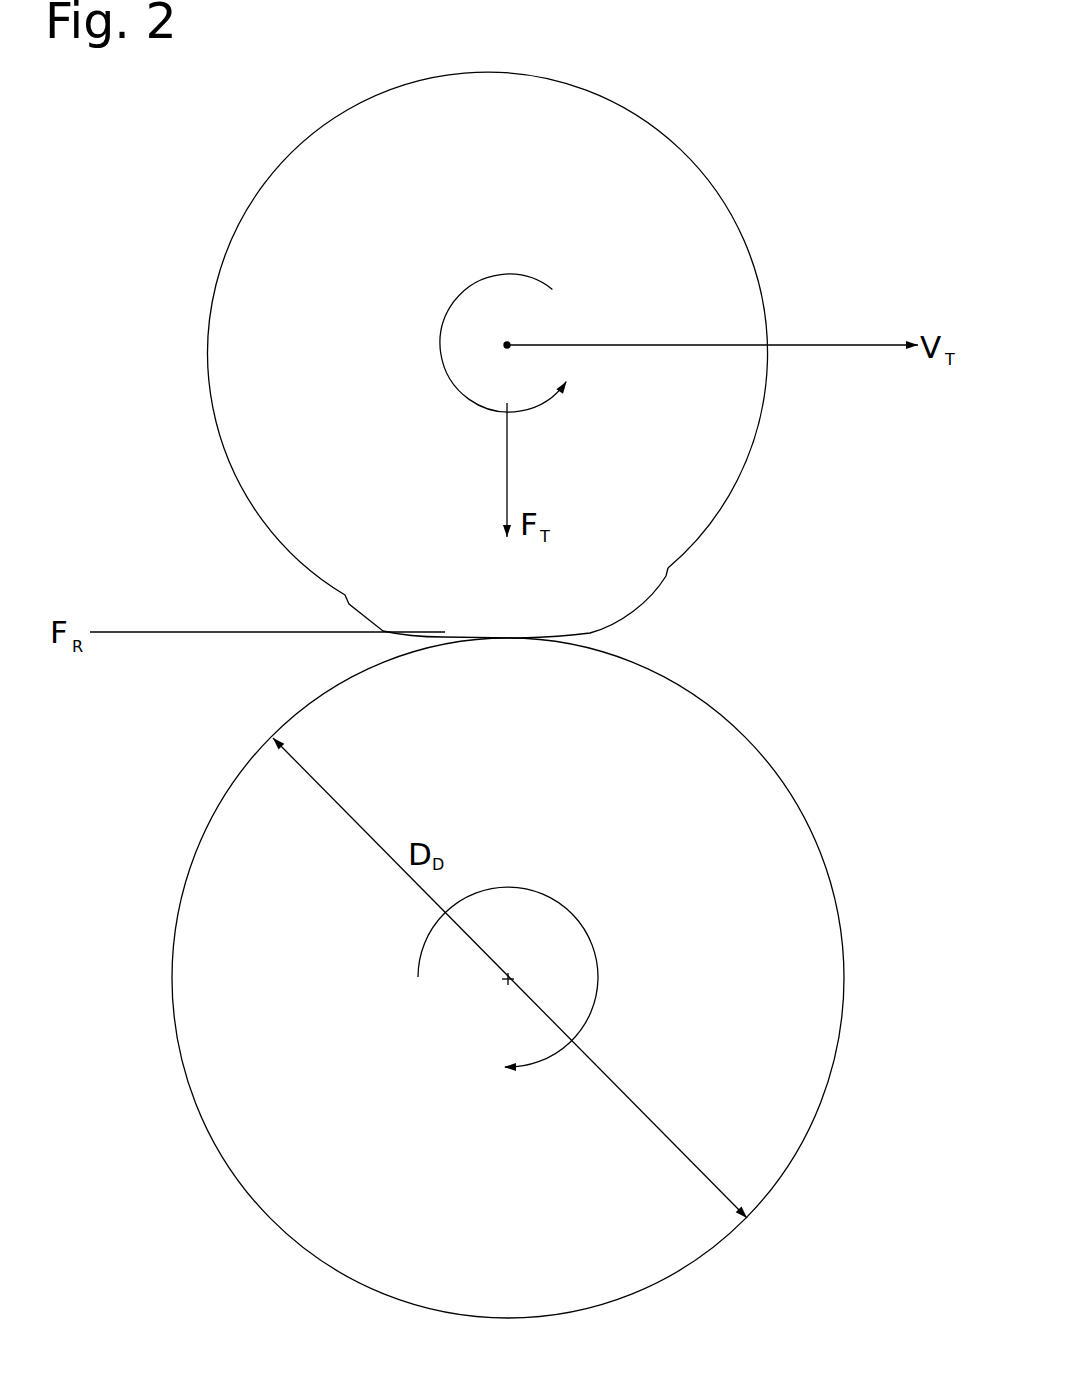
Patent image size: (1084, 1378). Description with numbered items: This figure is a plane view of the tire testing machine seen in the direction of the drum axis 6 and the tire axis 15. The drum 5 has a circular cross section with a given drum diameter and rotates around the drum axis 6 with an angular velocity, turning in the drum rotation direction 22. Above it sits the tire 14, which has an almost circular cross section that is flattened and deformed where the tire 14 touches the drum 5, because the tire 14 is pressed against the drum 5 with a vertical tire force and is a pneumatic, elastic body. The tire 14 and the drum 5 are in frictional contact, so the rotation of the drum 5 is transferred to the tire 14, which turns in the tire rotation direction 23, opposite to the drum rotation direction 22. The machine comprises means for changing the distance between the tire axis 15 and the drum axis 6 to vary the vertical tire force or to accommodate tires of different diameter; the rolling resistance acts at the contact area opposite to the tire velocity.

The tire 14 is at (486, 97).
The tire rotation direction 23 is at (458, 307).
The tire axis 15 is at (508, 344).
The drum 5 is at (323, 1140).
The drum rotation direction 22 is at (598, 960).
The drum axis 6 is at (512, 982).